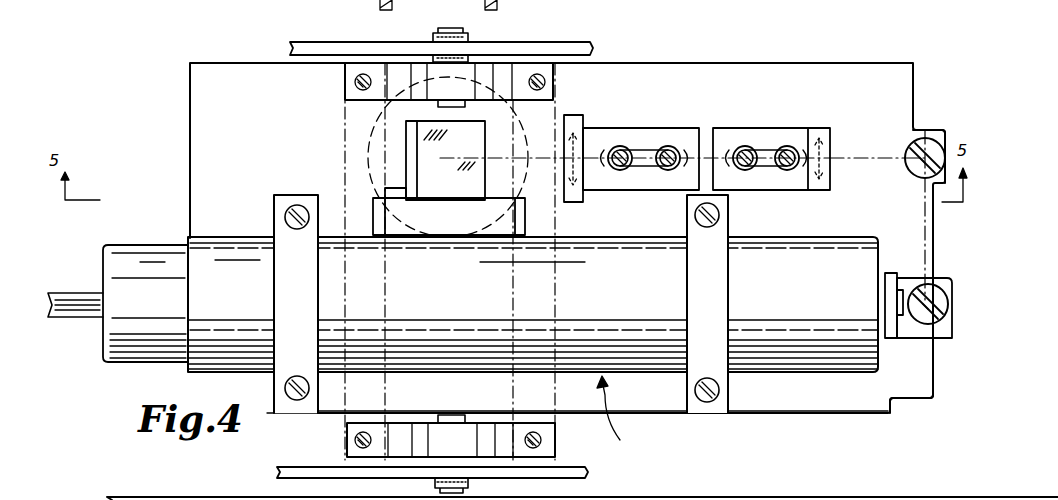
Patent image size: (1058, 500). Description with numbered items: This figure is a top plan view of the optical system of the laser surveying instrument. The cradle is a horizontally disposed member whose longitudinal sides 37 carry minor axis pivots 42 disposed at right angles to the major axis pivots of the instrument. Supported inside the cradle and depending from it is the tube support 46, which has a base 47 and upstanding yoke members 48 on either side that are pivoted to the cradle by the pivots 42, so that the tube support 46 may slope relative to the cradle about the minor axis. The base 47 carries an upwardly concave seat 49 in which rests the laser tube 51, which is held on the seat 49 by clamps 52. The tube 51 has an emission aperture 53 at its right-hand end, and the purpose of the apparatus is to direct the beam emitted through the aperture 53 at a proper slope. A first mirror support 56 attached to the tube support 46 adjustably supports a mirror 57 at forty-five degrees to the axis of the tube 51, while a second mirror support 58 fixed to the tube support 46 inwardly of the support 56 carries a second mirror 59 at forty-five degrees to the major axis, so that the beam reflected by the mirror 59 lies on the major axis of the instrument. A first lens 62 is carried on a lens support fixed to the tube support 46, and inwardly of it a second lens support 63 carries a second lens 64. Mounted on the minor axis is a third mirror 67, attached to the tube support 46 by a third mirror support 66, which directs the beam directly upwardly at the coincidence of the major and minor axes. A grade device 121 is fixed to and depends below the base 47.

The longitudinal sides 37 is at (330, 42).
The minor axis pivots 42 is at (453, 28).
The tube support 46 is at (461, 327).
The base 47 is at (567, 238).
The yoke members 48 is at (500, 68).
The seat 49 is at (908, 330).
The laser tube 51 is at (463, 304).
The clamps 52 is at (720, 287).
The emission aperture 53 is at (890, 272).
The first mirror support 56 is at (815, 135).
The mirror 57 is at (937, 290).
The second mirror support 58 is at (918, 148).
The second mirror 59 is at (938, 147).
The first lens 62 is at (867, 134).
The second lens support 63 is at (572, 115).
The second lens 64 is at (583, 150).
The third mirror support 66 is at (437, 235).
The third mirror 67 is at (445, 160).
The grade device 121 is at (698, 497).